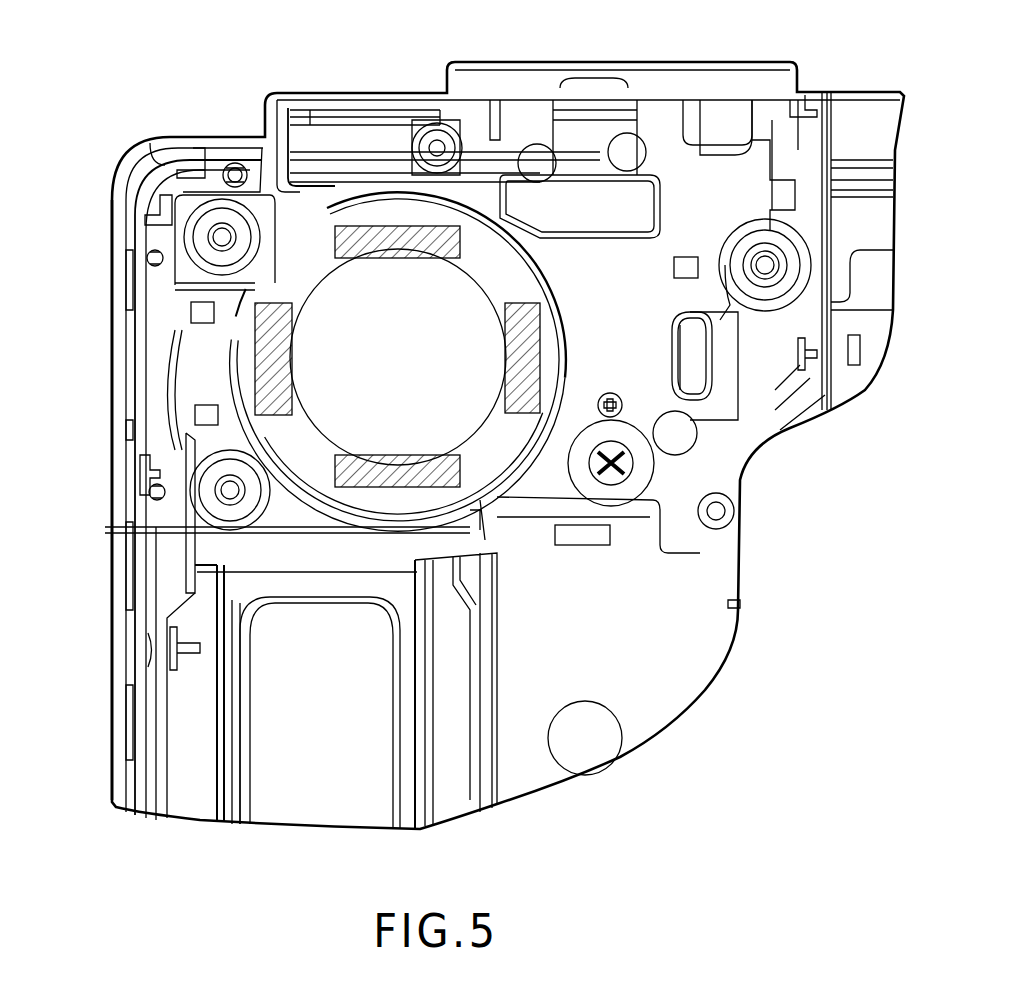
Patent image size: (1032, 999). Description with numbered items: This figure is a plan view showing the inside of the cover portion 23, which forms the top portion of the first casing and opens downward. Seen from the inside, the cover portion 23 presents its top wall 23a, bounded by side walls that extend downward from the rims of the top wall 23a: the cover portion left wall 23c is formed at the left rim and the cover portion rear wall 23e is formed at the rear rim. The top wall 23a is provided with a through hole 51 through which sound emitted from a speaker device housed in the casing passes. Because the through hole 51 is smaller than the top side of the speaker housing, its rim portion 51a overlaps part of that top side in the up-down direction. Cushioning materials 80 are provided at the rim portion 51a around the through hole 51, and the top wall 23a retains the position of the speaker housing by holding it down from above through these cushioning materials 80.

The cover portion 23 is at (490, 63).
The top wall 23a is at (708, 160).
The cover portion left wall 23c is at (110, 317).
The cover portion rear wall 23e is at (338, 90).
The through hole 51 is at (458, 302).
The rim portion 51a is at (482, 433).
The cushioning materials 80 is at (400, 262).